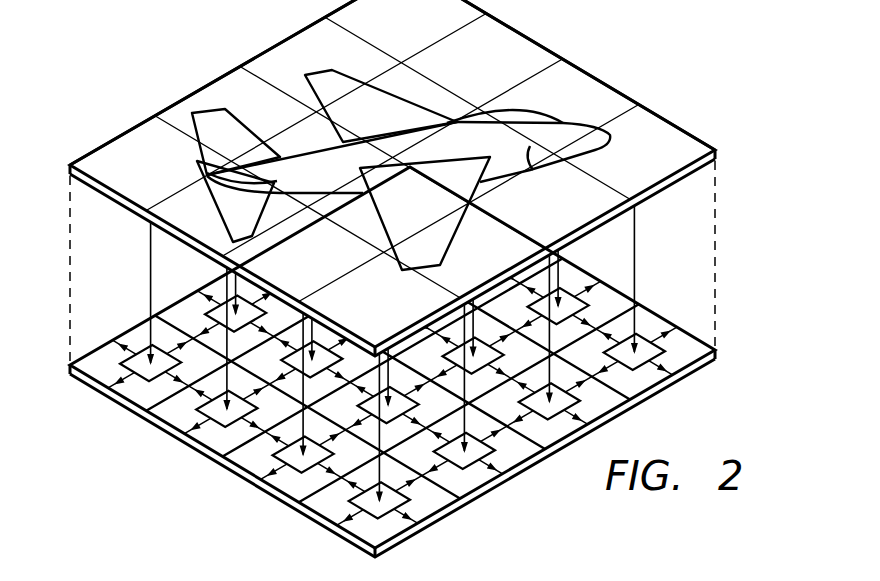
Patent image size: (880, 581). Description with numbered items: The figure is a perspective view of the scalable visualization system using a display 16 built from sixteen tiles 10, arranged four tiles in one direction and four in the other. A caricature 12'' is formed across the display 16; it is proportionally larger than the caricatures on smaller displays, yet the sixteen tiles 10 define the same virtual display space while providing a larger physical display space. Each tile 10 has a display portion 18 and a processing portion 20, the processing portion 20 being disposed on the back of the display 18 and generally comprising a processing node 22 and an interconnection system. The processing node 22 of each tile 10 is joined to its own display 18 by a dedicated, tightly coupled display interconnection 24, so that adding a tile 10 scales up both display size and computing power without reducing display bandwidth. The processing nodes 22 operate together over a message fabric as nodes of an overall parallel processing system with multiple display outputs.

The tile 10 is at (137, 148).
The caricature 12'' is at (401, 160).
The display 16 is at (192, 46).
The display portion 18 is at (92, 160).
The processing portion 20 is at (84, 382).
The processing node 22 is at (640, 333).
The display interconnection 24 is at (152, 257).